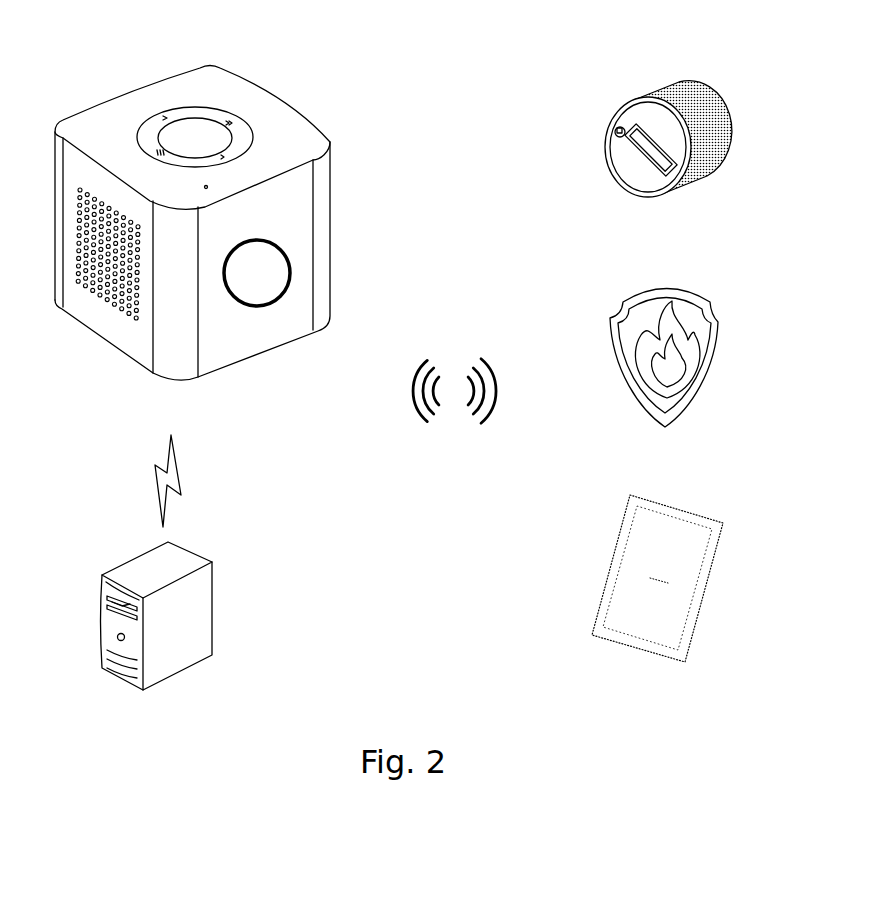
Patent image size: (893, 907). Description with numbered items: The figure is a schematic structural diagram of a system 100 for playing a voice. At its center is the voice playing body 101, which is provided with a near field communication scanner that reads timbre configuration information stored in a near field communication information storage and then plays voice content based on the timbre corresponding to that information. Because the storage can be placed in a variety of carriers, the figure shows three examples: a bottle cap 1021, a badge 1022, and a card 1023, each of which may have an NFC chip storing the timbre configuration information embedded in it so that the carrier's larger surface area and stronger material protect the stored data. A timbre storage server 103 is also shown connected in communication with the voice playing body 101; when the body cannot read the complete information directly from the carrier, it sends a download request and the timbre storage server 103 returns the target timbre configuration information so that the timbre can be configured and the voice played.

The system for playing a voice 100 is at (566, 39).
The voice playing body 101 is at (192, 247).
The timbre storage server 103 is at (157, 635).
The bottle cap 1021 is at (687, 147).
The badge 1022 is at (687, 369).
The card 1023 is at (680, 593).